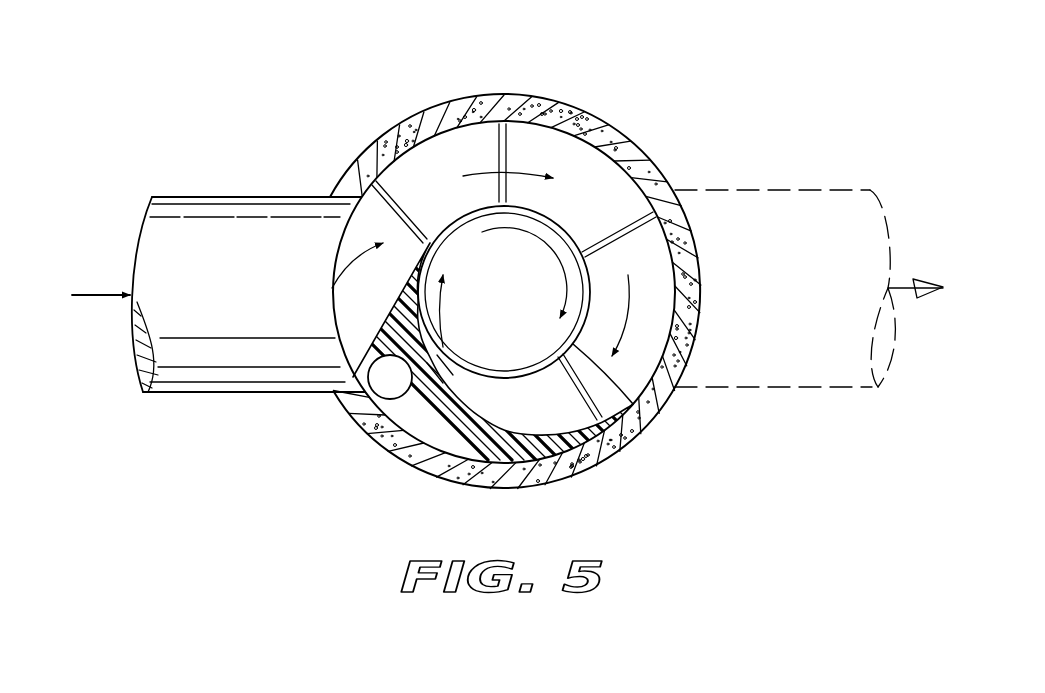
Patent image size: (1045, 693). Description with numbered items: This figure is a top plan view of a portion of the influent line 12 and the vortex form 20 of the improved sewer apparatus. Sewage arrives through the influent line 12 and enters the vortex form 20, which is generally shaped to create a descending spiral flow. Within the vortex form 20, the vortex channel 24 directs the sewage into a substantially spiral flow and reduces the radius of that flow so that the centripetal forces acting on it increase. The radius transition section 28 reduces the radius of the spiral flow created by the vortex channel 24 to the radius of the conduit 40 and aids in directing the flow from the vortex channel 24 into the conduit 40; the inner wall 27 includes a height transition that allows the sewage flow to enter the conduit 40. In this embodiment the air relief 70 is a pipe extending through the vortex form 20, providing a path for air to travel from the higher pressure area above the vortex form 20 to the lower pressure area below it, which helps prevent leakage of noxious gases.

The influent line 12 is at (242, 393).
The vortex form 20 is at (415, 132).
The vortex channel 24 is at (593, 173).
The inner wall 27 is at (640, 410).
The radius transition section 28 is at (468, 448).
The conduit 40 is at (475, 385).
The air relief 70 is at (377, 396).